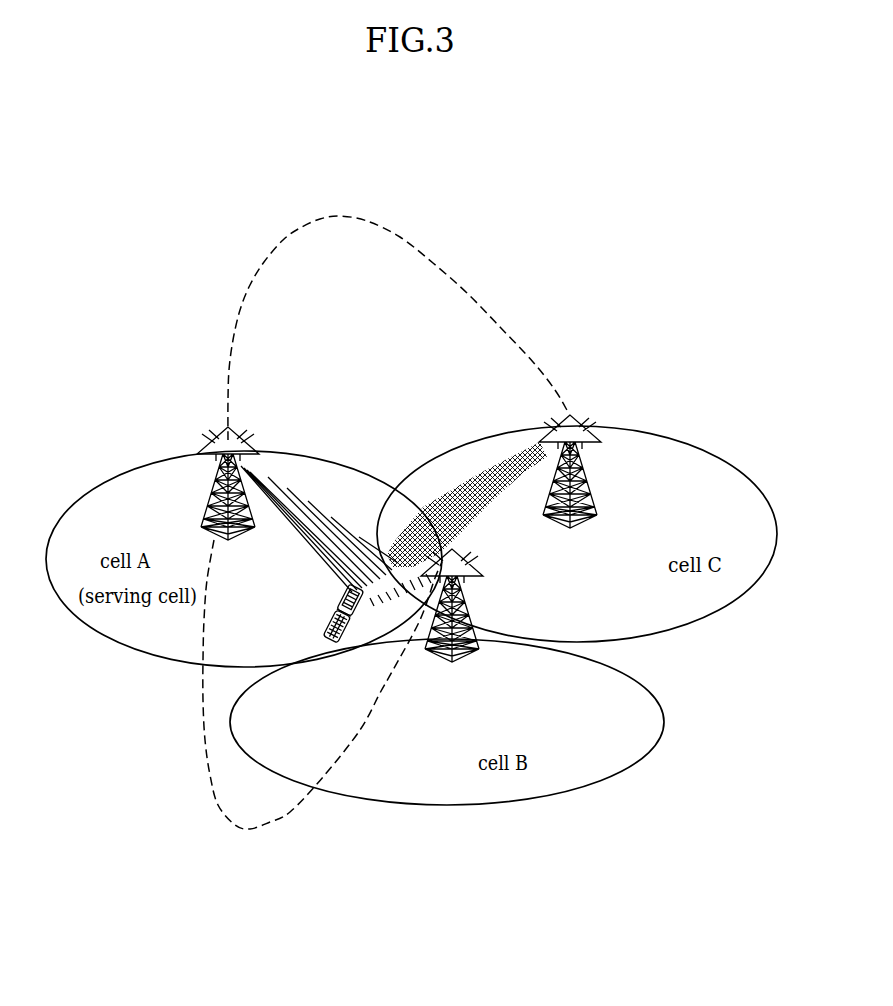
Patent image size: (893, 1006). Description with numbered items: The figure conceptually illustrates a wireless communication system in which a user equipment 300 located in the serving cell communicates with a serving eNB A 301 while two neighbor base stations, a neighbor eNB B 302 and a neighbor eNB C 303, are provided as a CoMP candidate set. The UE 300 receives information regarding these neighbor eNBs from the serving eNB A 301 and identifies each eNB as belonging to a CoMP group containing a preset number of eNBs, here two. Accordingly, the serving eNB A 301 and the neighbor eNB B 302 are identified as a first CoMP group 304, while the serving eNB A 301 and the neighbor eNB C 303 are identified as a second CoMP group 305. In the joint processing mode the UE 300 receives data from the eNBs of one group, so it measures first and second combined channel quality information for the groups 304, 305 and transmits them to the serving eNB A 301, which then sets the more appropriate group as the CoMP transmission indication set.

The user equipment 300 is at (298, 613).
The serving eNB A 301 is at (228, 500).
The neighbor eNB B 302 is at (469, 617).
The neighbor eNB C 303 is at (595, 471).
The first CoMP group 304 is at (313, 702).
The second CoMP group 305 is at (398, 307).